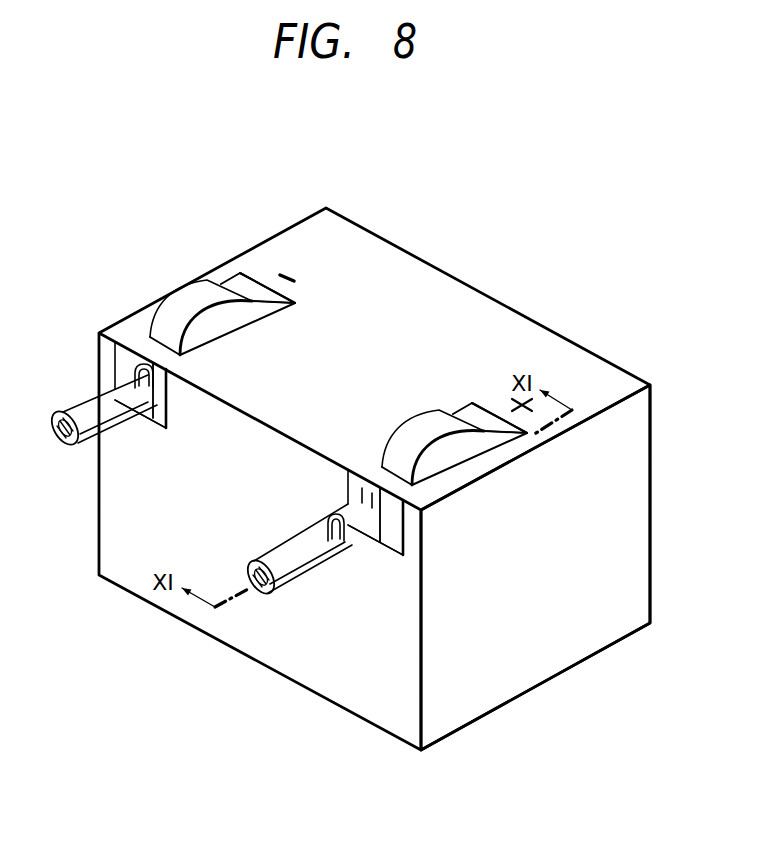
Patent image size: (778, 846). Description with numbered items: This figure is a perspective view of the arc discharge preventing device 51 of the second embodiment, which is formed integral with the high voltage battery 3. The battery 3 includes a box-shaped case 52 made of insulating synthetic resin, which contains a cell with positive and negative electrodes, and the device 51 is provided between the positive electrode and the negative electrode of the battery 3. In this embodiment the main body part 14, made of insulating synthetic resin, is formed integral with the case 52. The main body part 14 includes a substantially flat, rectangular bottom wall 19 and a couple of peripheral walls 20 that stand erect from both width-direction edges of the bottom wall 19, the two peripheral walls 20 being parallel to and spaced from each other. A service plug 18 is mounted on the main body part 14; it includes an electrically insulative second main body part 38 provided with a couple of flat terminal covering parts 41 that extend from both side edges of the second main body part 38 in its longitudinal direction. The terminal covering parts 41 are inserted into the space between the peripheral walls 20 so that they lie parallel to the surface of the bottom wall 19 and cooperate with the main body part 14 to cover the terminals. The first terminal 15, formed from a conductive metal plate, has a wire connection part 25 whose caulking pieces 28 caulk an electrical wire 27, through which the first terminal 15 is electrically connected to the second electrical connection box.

The high voltage battery 3 is at (652, 408).
The case 52 is at (631, 583).
The second main body part 38 is at (294, 306).
The service plug 18 is at (207, 277).
The arc discharge preventing device 51 is at (248, 275).
The terminal covering part 41 is at (257, 293).
The peripheral wall 20 is at (113, 359).
The bottom wall 19 is at (143, 437).
The main body part 14 is at (150, 428).
The first terminal 15 is at (165, 420).
The wire connection part 25 is at (127, 370).
The electrical wire 27 is at (70, 438).
The caulking piece 28 is at (130, 362).